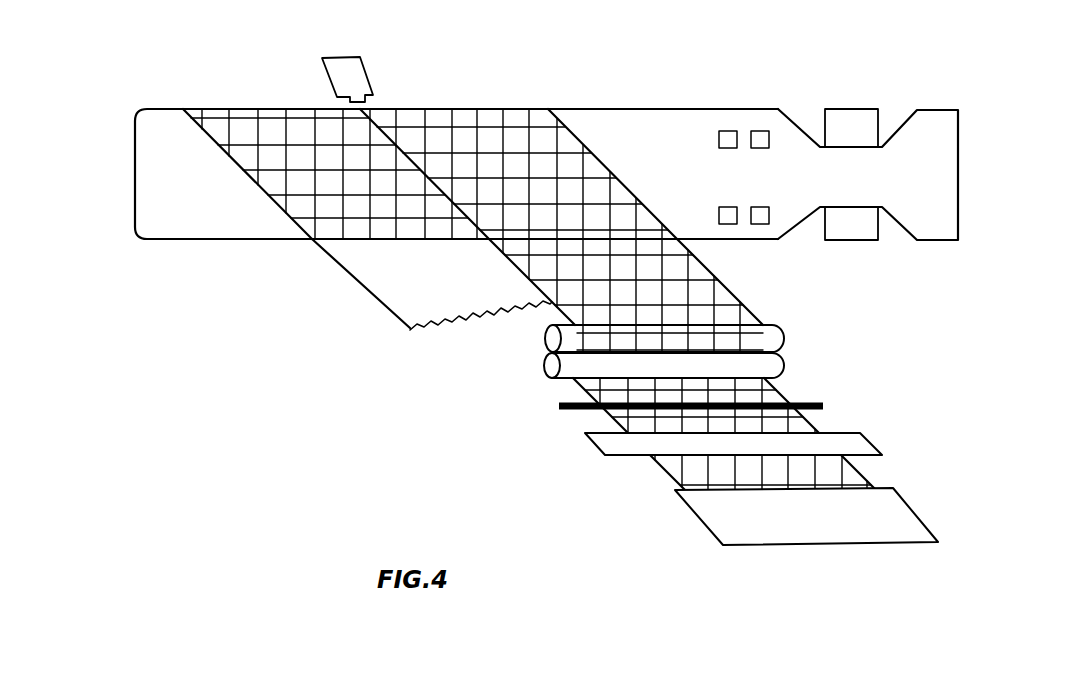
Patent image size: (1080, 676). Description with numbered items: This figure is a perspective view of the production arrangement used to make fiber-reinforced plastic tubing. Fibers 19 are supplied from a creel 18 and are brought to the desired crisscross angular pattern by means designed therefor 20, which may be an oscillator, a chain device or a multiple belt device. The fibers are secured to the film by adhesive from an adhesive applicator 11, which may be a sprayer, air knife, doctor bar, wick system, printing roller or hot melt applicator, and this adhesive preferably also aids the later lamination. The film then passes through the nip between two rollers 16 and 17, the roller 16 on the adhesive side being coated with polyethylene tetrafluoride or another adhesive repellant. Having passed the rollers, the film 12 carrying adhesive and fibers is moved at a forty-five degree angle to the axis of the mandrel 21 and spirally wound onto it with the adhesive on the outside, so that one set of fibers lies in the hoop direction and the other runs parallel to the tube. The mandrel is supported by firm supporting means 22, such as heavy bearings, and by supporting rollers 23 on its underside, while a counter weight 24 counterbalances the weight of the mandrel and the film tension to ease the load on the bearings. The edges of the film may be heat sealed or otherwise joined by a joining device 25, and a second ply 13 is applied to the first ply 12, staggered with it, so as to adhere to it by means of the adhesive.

The adhesive applicator 11 is at (823, 404).
The film 12 is at (488, 108).
The second ply 13 is at (418, 281).
The roller 16 is at (546, 367).
The roller 17 is at (545, 340).
The creel 18 is at (888, 513).
The fibers 19 is at (673, 480).
The means for bringing fibers to angular pattern 20 is at (858, 442).
The mandrel 21 is at (668, 142).
The supporting means 22 is at (848, 275).
The supporting rollers 23 is at (760, 265).
The counter weight 24 is at (927, 180).
The joining device 25 is at (352, 80).